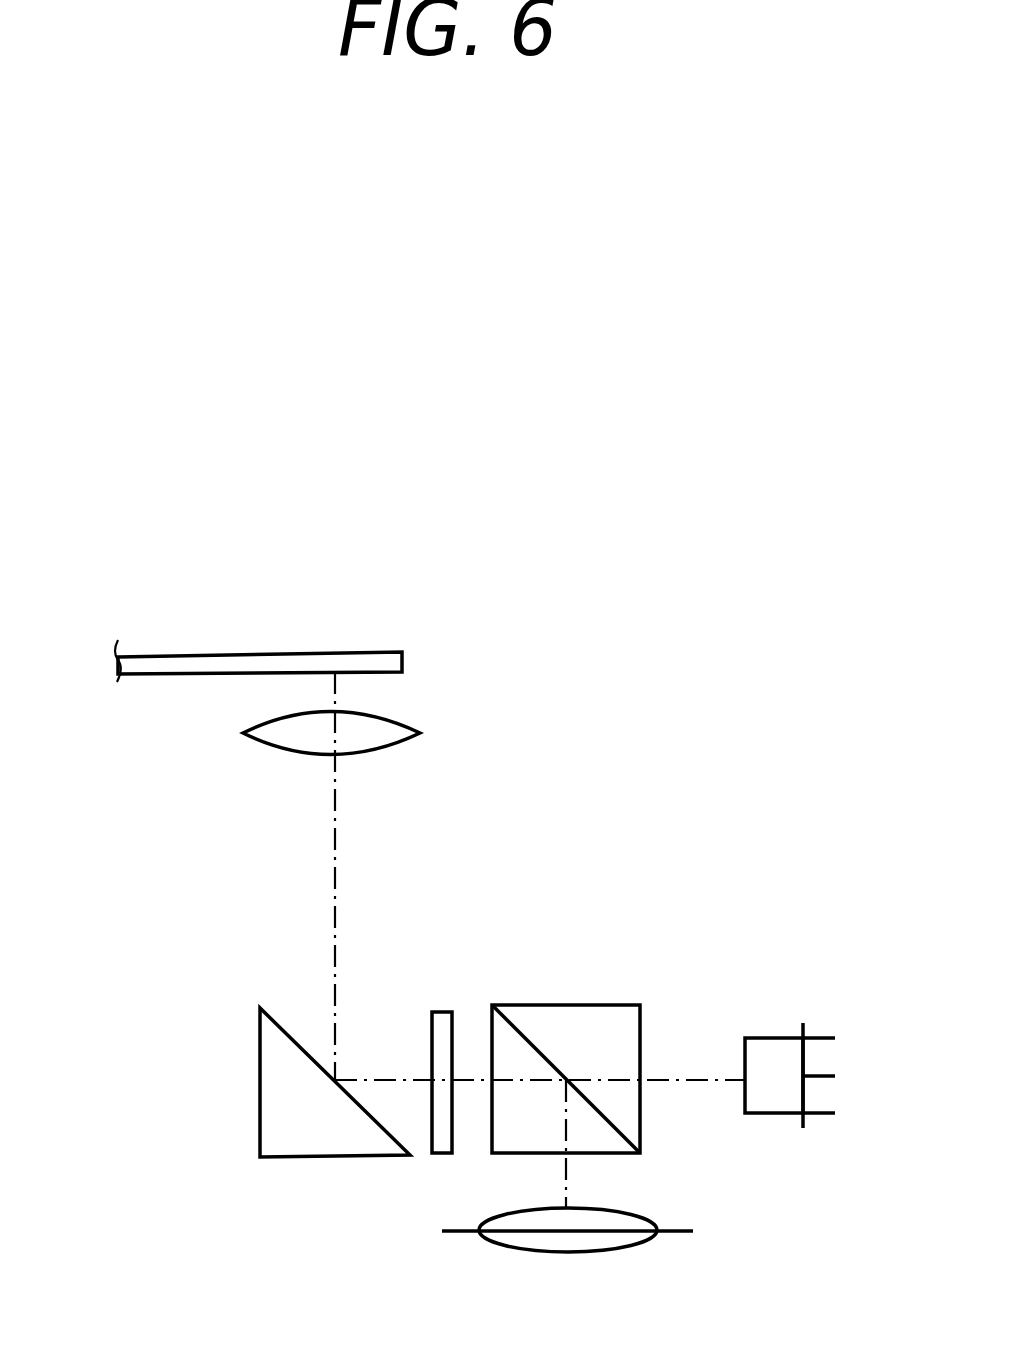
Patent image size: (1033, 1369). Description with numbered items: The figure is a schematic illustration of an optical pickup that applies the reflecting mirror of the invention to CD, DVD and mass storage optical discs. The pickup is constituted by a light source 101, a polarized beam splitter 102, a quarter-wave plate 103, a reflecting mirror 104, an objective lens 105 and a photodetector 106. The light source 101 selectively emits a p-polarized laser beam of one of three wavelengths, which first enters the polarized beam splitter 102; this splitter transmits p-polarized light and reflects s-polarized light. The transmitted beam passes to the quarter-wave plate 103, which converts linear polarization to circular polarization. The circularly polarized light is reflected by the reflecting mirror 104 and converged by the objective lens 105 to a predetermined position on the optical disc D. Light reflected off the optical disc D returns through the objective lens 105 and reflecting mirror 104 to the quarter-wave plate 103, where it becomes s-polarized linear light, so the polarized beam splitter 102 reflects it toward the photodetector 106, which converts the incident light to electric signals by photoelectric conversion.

The optical disc D is at (402, 661).
The light source 101 is at (767, 1038).
The polarized beam splitter 102 is at (587, 1003).
The λ/4 wave plate 103 is at (440, 1010).
The reflecting mirror 104 is at (260, 1083).
The objective lens 105 is at (245, 742).
The photodetector 106 is at (480, 1238).